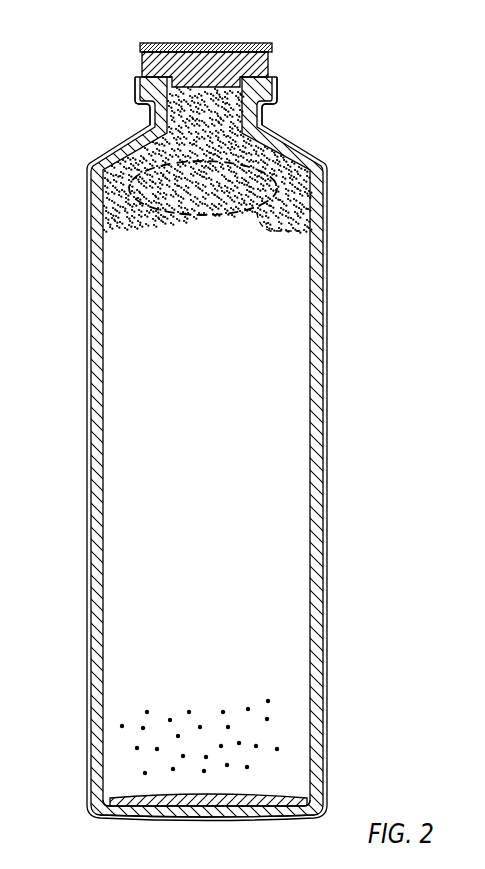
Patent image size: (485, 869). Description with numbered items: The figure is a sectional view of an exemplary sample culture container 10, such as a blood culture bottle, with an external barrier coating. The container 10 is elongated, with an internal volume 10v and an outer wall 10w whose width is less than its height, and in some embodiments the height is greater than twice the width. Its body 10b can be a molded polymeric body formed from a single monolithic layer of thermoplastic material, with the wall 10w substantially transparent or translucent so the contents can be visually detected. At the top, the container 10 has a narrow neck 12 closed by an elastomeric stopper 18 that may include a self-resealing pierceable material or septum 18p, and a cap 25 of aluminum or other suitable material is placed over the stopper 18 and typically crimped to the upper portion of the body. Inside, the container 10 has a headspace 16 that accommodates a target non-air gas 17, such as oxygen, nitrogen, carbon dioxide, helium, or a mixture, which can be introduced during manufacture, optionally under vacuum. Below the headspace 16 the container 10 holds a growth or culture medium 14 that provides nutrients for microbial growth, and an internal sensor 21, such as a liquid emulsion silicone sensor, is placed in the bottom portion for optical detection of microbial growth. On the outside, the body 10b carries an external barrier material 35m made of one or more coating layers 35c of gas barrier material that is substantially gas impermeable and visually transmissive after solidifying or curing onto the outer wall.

The sample culture container 10 is at (242, 434).
The outer wall 10w is at (322, 467).
The container body 10b is at (92, 505).
The internal volume 10v is at (235, 425).
The neck 12 is at (268, 113).
The growth or culture medium 14 is at (253, 733).
The headspace 16 is at (300, 233).
The gas 17 is at (270, 185).
The elastomeric stopper 18 is at (272, 63).
The septum 18p is at (208, 52).
The internal sensor 21 is at (263, 792).
The cap 25 is at (143, 43).
The gas barrier coating layer 35c is at (87, 420).
The external barrier material 35m is at (87, 273).